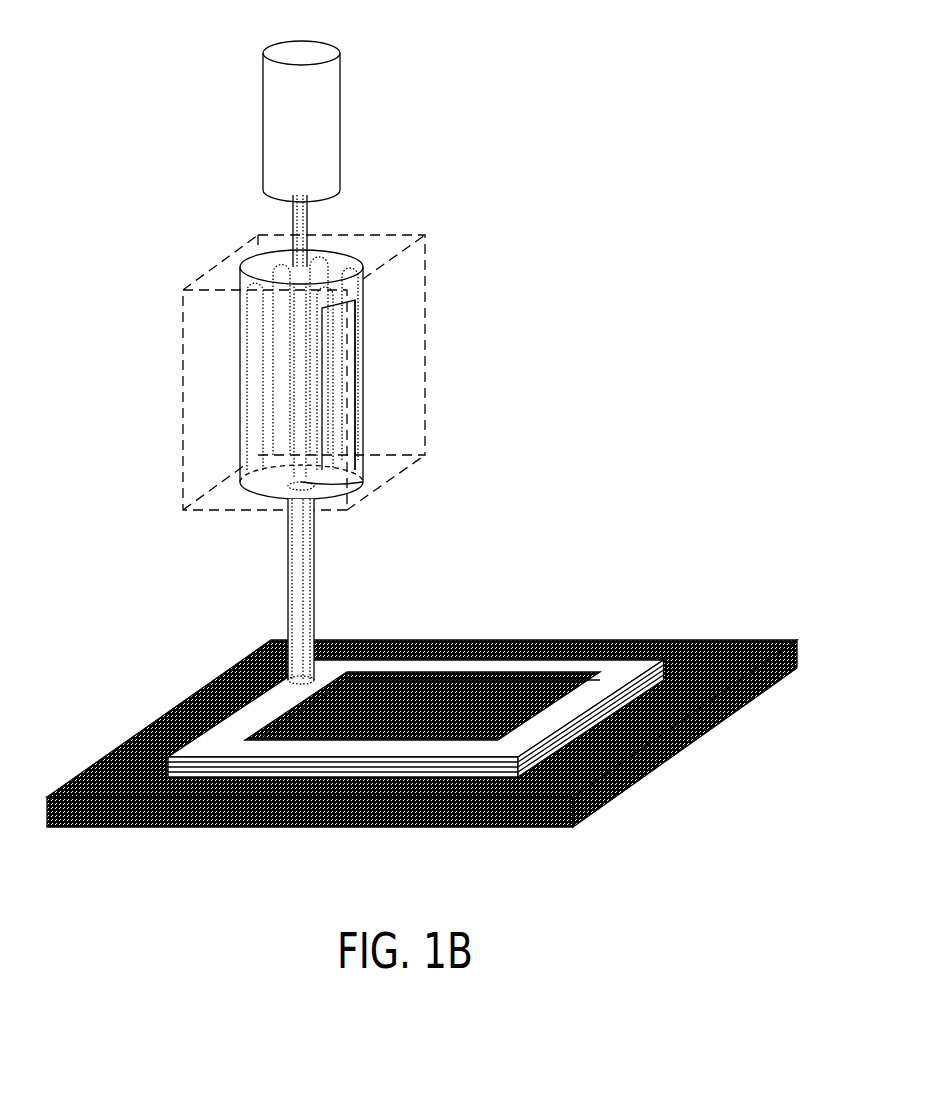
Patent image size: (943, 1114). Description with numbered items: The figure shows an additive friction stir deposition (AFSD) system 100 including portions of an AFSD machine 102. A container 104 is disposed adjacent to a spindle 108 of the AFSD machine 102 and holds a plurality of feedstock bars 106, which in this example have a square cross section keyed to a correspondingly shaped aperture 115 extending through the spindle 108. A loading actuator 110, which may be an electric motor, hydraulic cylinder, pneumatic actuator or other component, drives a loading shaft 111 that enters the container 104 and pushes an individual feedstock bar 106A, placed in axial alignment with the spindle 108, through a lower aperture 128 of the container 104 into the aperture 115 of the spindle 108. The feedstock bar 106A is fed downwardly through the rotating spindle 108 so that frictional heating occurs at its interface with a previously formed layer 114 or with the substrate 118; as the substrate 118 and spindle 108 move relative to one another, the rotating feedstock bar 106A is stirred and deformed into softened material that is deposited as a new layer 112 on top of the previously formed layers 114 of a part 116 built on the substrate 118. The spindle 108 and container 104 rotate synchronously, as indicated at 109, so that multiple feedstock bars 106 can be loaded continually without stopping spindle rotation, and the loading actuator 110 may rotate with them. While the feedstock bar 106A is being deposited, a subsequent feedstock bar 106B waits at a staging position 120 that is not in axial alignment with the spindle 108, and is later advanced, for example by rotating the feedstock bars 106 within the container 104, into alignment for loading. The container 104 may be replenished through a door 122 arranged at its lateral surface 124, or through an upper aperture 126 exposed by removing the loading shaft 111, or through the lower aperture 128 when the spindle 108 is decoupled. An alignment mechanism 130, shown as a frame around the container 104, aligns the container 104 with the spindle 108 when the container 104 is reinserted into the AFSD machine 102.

The AFSD system 100 is at (431, 62).
The AFSD machine 102 is at (124, 498).
The container 104 is at (240, 348).
The feedstock bars 106 is at (262, 489).
The individual feedstock bar 106A is at (314, 604).
The subsequent feedstock bar 106B is at (318, 484).
The spindle 108 is at (288, 585).
The synchronous rotation 109 is at (397, 537).
The loading actuator 110 is at (243, 176).
The loading shaft 111 is at (308, 222).
The new layer 112 is at (207, 745).
The previously formed layer 114 is at (550, 747).
The aperture 115 is at (314, 568).
The part 116 is at (501, 613).
The substrate 118 is at (693, 652).
The staging position 120 is at (344, 478).
The door 122 is at (358, 367).
The lateral surface 124 is at (375, 431).
The upper aperture 126 is at (283, 260).
The lower aperture 128 is at (290, 487).
The alignment mechanism 130 is at (430, 250).